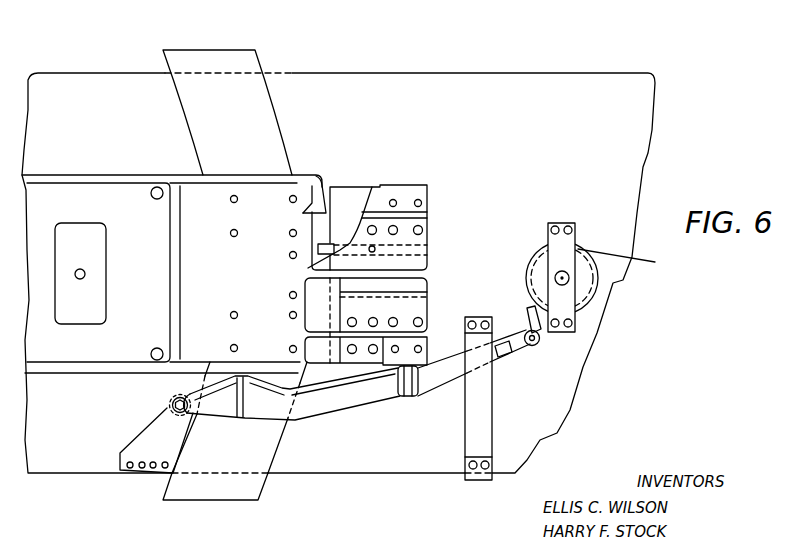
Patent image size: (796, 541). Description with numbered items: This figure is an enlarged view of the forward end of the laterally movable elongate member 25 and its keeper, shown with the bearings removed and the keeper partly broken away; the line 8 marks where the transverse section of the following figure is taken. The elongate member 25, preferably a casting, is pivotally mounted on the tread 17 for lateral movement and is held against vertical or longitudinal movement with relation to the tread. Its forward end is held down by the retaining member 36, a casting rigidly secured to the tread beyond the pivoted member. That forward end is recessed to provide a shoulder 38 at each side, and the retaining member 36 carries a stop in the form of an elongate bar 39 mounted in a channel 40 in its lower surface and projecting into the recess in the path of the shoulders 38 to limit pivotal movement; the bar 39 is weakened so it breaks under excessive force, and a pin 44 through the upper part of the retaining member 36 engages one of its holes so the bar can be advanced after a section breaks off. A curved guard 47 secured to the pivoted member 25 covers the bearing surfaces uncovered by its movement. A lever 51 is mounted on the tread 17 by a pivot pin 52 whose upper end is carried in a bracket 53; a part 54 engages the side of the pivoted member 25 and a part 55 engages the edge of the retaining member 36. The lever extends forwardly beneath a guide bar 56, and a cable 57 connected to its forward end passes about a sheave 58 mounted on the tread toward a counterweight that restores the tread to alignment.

The section line 8— 8 is at (244, 62).
The tread 17 is at (420, 90).
The elongate member 25 is at (107, 180).
The retaining member 36 is at (421, 191).
The shoulder 38 is at (322, 176).
The elongate bar 39 is at (318, 248).
The channel 40 is at (353, 232).
The pin 44 is at (375, 248).
The guard 47 is at (268, 100).
The lever 51 is at (375, 398).
The pivot pin 52 is at (175, 400).
The bracket 53 is at (150, 427).
The part 54 is at (242, 375).
The part 55 is at (404, 396).
The guide bar 56 is at (483, 400).
The cable 57 is at (616, 252).
The sheave 58 is at (582, 283).